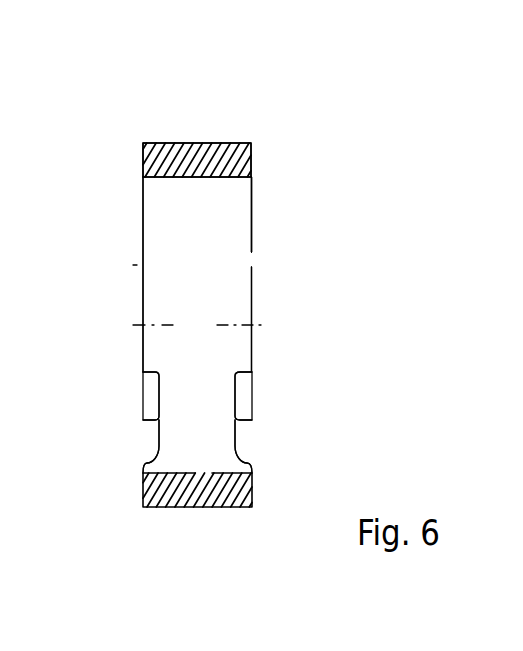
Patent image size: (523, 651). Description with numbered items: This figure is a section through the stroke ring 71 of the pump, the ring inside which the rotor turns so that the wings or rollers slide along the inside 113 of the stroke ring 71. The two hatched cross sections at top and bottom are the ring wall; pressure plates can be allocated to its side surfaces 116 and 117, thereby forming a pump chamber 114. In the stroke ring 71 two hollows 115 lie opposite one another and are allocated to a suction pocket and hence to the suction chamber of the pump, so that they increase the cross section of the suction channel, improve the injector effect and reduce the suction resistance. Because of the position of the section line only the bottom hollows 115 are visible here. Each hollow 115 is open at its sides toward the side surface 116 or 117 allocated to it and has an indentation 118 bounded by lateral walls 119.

The stroke ring 71 is at (292, 114).
The inside of the stroke ring 113 is at (200, 178).
The pump chamber 114 is at (213, 250).
The hollows 115 is at (147, 437).
The side surface 116 is at (143, 160).
The side surface 117 is at (252, 165).
The indentation 118 is at (159, 403).
The lateral walls 119 is at (145, 389).